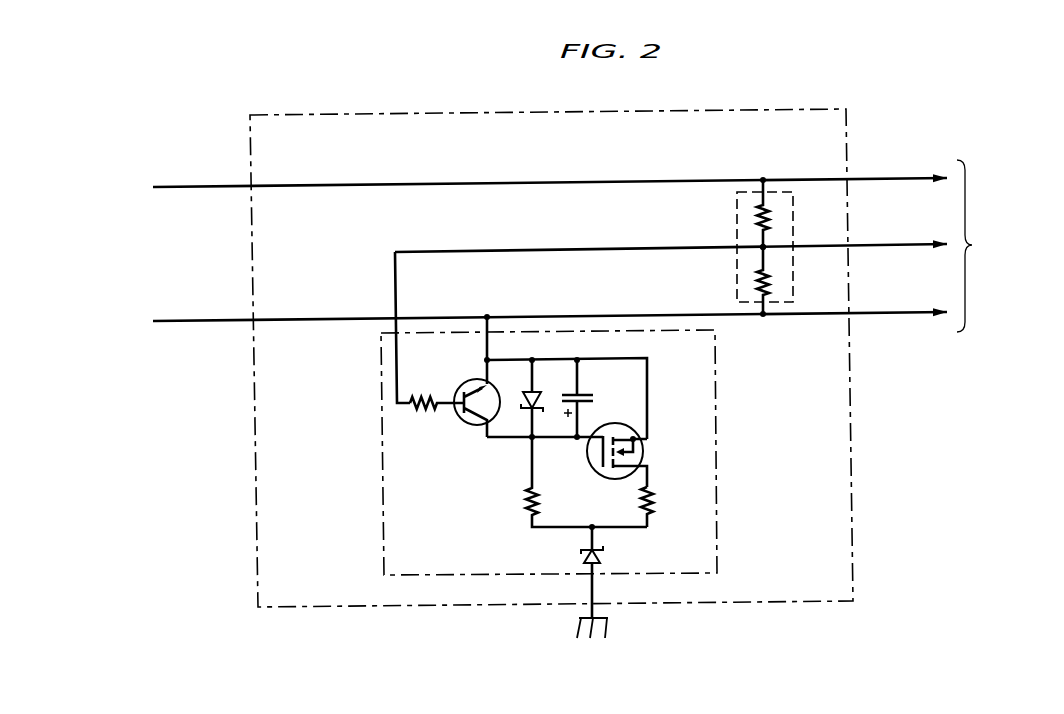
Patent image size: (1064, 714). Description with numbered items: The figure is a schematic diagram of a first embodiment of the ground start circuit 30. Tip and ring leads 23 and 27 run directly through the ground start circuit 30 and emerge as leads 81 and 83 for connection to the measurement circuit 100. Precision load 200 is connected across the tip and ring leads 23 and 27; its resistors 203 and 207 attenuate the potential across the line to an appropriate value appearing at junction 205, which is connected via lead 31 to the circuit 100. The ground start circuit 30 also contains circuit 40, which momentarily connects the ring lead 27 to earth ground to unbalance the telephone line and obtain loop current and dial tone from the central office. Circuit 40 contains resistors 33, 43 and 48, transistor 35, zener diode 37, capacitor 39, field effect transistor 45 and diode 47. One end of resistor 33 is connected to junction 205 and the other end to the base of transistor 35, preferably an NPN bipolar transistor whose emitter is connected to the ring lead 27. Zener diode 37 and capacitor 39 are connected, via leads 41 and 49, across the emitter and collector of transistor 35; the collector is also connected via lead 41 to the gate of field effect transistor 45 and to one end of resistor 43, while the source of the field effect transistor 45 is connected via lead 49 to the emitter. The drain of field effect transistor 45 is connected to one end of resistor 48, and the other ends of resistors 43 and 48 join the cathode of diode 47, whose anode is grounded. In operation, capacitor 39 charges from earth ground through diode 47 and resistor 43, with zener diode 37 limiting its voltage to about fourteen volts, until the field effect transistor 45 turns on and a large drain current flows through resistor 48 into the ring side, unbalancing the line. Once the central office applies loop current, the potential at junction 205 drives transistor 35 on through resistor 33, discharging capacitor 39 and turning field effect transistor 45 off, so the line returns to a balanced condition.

The tip lead 23 is at (170, 186).
The ring lead 27 is at (170, 320).
The ground start circuit 30 is at (300, 115).
The lead 31 is at (437, 252).
The resistor 33 is at (423, 396).
The transistor 35 is at (469, 423).
The zener diode 37 is at (531, 390).
The capacitor 39 is at (584, 396).
The circuit 40 is at (381, 372).
The lead 41 is at (580, 439).
The resistor 43 is at (527, 501).
The field effect transistor 45 is at (590, 463).
The diode 47 is at (604, 553).
The resistor 48 is at (640, 500).
The lead 49 is at (595, 358).
The lead 81 is at (910, 177).
The lead 83 is at (910, 311).
The measurement circuit 100 is at (1007, 246).
The precision load 200 is at (737, 215).
The resistor 203 is at (770, 218).
The junction 205 is at (772, 247).
The resistor 207 is at (770, 283).